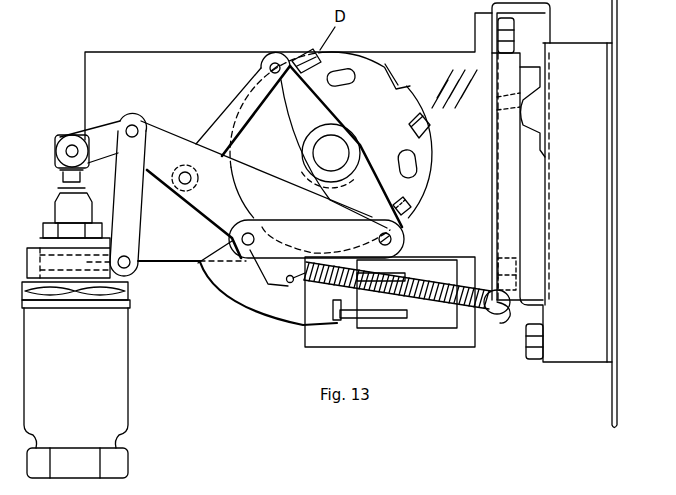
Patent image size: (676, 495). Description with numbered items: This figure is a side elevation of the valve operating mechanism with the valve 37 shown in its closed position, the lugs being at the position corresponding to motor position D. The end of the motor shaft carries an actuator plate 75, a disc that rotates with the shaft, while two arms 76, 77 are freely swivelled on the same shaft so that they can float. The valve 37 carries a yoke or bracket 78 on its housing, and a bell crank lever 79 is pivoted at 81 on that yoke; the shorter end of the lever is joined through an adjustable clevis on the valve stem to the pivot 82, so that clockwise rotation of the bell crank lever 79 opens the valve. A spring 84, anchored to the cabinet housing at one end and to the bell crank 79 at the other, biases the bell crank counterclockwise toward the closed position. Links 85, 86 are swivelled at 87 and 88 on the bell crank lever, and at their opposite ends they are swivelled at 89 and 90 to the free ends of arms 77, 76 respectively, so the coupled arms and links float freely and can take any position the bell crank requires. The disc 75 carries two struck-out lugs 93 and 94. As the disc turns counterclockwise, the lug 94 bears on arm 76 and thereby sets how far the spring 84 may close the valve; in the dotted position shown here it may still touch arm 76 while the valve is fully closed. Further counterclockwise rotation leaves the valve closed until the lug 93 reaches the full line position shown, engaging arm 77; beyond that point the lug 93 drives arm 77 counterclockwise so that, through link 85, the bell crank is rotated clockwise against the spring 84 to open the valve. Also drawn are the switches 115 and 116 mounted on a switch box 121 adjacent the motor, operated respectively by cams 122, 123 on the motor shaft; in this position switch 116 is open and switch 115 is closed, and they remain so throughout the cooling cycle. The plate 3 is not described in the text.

The mounting plate 3 is at (615, 75).
The valve 37 is at (128, 365).
The actuator plate 75 is at (434, 163).
The arm 76 is at (330, 200).
The arm 77 is at (288, 138).
The yoke or bracket 78 is at (143, 217).
The bell crank lever 79 is at (174, 134).
The pivot 81 is at (135, 122).
The pivot 82 is at (60, 143).
The spring 84 is at (430, 282).
The link 85 is at (222, 112).
The link 86 is at (275, 220).
The swivel 87 is at (191, 184).
The swivel 88 is at (248, 247).
The swivel 89 is at (273, 63).
The swivel 90 is at (385, 232).
The struck out lug 93 is at (310, 58).
The struck out lug 94 is at (410, 83).
The switch 115 is at (352, 320).
The switch 116 is at (382, 280).
The switch box 121 is at (458, 347).
The cam 122 is at (270, 305).
The cam 123 is at (338, 255).